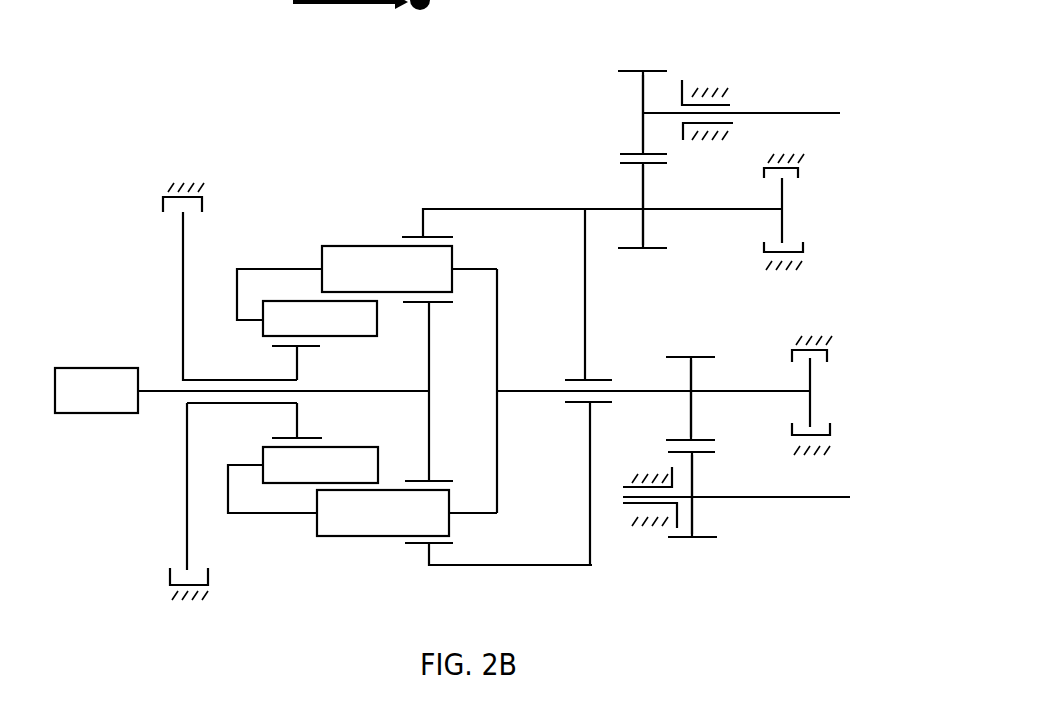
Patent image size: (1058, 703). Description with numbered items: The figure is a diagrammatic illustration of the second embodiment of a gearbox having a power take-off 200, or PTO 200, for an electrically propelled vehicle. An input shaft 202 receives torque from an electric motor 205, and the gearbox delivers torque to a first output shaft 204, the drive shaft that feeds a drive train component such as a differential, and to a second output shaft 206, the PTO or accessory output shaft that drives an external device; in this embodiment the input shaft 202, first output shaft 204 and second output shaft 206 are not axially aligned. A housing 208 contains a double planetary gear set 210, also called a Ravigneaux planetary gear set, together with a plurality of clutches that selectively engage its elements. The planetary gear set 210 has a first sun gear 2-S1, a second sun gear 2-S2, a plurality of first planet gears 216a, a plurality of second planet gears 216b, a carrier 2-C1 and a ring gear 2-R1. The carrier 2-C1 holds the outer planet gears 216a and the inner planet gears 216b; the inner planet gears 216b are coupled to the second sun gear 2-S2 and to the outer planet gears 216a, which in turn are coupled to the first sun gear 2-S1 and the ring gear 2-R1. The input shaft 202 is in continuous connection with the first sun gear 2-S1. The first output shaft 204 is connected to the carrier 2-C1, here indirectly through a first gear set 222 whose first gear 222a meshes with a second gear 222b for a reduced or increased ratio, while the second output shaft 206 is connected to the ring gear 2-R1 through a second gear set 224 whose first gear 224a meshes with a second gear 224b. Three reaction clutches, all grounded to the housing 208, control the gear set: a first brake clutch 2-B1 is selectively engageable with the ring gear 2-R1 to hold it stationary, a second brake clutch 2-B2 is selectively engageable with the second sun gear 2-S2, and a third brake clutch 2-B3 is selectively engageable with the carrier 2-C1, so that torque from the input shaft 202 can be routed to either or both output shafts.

The gearbox having a power take-off 200 is at (322, 187).
The input shaft 202 is at (168, 392).
The first output shaft 204 is at (810, 497).
The electric motor 205 is at (96, 390).
The second output shaft 206 is at (795, 113).
The housing 208 is at (723, 90).
The double planetary gear set 210 is at (360, 227).
The first planet gears 216a is at (367, 283).
The second planet gears 216b is at (320, 318).
The first gear set 222 is at (733, 518).
The first gear 222a is at (691, 410).
The second gear 222b is at (705, 540).
The second gear set 224 is at (680, 60).
The first gear 224a is at (643, 103).
The second gear 224b is at (643, 188).
The first brake clutch 2-B1 is at (807, 214).
The second brake clutch 2-B2 is at (153, 200).
The third brake clutch 2-B3 is at (833, 395).
The carrier 2-C1 is at (497, 330).
The ring gear 2-R1 is at (430, 208).
The first sun gear 2-S1 is at (429, 356).
The second sun gear 2-S2 is at (297, 413).